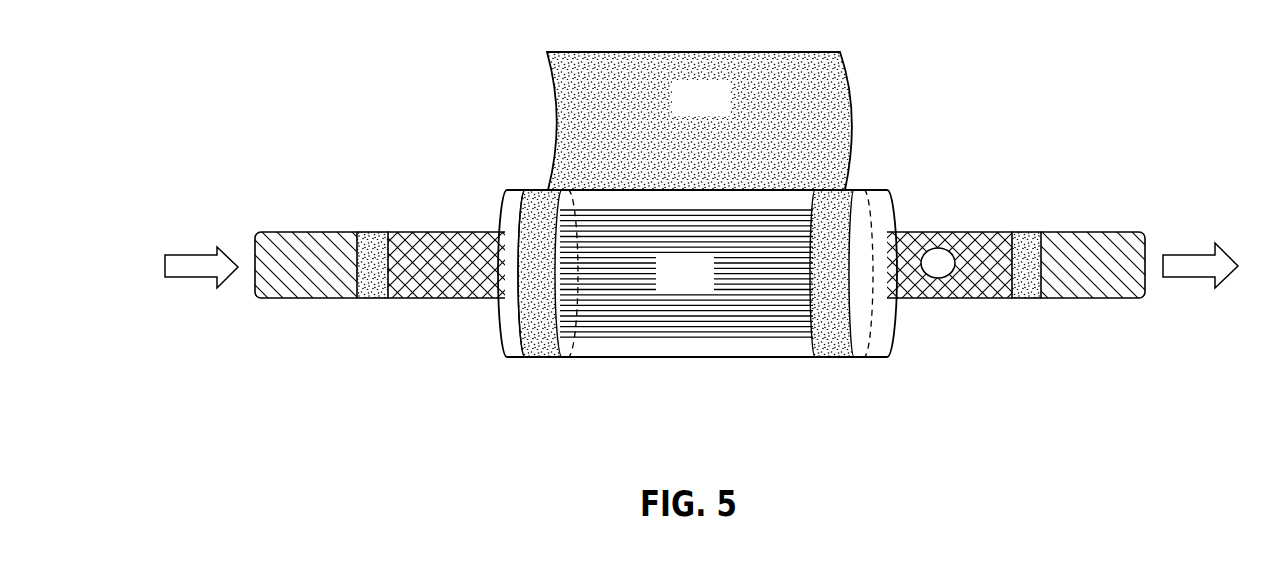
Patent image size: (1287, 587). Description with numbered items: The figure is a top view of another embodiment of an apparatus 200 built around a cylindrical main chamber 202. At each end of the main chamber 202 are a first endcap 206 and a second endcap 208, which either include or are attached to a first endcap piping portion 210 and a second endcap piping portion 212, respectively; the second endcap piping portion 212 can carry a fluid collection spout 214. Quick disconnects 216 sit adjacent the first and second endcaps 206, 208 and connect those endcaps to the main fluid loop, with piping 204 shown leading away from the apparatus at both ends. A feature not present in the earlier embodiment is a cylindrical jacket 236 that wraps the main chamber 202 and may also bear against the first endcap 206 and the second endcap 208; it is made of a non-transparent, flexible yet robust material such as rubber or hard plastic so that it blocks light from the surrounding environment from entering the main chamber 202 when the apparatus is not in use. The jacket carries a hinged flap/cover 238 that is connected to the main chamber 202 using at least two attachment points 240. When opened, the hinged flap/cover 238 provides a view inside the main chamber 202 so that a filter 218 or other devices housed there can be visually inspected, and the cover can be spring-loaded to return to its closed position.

The apparatus 200 is at (233, 68).
The main chamber 202 is at (694, 326).
The tubing 204 is at (310, 243).
The first endcap 206 is at (510, 343).
The second endcap 208 is at (875, 343).
The first endcap piping portion 210 is at (453, 242).
The second endcap piping portion 212 is at (982, 276).
The fluid collection spout 214 is at (943, 273).
The quick disconnects 216 is at (372, 292).
The filter 218 is at (682, 357).
The cylindrical jacket 236 is at (545, 343).
The hinged flap/cover 238 is at (722, 110).
The attachment points 240 is at (547, 187).